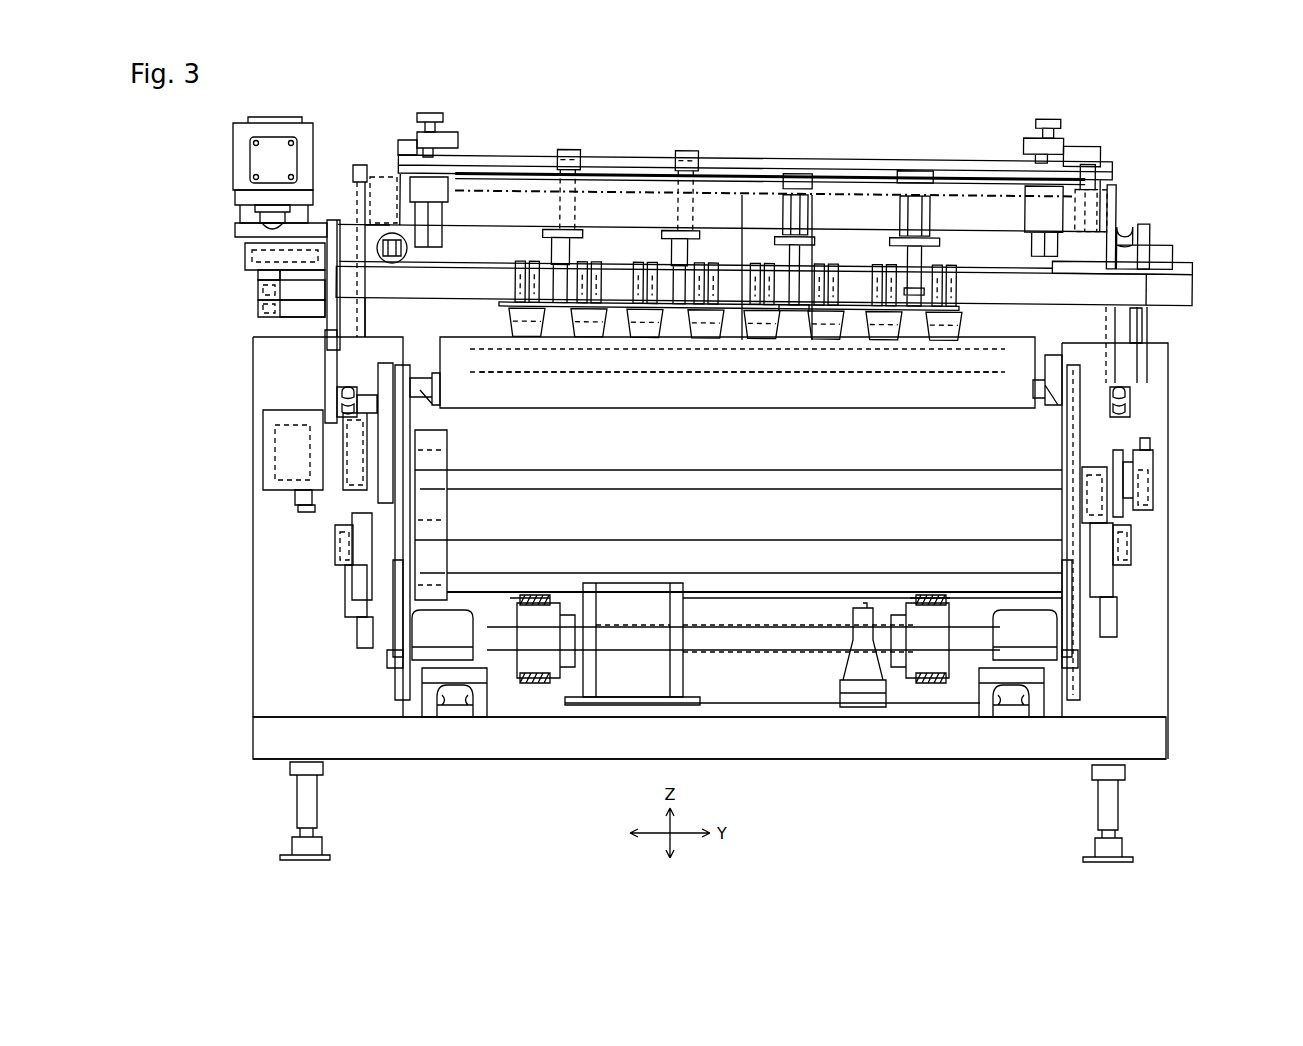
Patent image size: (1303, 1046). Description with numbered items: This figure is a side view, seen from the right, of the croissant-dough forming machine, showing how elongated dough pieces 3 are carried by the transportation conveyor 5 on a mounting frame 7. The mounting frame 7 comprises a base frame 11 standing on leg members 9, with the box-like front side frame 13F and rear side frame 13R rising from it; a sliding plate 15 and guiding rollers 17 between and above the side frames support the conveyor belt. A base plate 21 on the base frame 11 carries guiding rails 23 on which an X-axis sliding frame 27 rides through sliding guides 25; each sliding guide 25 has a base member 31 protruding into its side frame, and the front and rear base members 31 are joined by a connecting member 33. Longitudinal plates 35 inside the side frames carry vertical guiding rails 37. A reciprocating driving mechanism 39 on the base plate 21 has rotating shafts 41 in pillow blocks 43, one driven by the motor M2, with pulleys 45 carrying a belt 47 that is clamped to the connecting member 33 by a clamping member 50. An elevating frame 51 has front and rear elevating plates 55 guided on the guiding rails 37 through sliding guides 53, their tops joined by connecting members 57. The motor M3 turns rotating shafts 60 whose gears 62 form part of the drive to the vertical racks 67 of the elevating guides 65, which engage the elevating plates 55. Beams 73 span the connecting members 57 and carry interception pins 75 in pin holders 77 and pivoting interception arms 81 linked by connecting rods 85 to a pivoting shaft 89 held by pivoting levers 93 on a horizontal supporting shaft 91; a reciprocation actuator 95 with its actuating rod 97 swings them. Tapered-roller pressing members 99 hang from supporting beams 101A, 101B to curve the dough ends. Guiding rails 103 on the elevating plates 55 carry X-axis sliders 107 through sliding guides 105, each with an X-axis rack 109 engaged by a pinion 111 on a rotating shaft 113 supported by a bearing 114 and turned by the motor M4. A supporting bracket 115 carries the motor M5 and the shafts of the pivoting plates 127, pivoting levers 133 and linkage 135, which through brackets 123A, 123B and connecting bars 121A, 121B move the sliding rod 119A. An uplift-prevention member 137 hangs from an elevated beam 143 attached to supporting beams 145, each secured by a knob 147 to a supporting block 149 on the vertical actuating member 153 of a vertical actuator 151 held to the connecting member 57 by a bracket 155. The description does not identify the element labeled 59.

The croissant dough pieces 3 is at (686, 345).
The transportation conveyor 5 is at (758, 433).
The mounting frame 7 is at (823, 778).
The leg members 9 is at (318, 812).
The base frame 11 is at (776, 760).
The front side frame 13F is at (395, 700).
The rear side frame 13R is at (1068, 700).
The sliding plate 15 is at (1058, 335).
The guiding rollers 17 is at (1040, 410).
The base plate 21 is at (740, 722).
The guiding rails 23 is at (455, 703).
The sliding guides 25 is at (478, 720).
The X-axis sliding frame 27 is at (370, 666).
The base member 31 is at (398, 668).
The connecting member 33 is at (748, 600).
The longitudinal plates 35 is at (393, 648).
The guiding rails 37 is at (395, 375).
The reciprocating driving mechanism 39 is at (582, 748).
The rotating shafts 41 is at (812, 650).
The pillow blocks 43 is at (860, 705).
The pulleys 45 is at (548, 683).
The belt 47 is at (530, 686).
The clamping member 50 is at (555, 598).
The elevating frame 51 is at (1118, 179).
The sliding guides 53 is at (360, 520).
The elevating plates 55 is at (368, 325).
The connecting members 57 is at (620, 205).
The gear 59 is at (473, 452).
The rotating shafts 60 is at (645, 555).
The gears 62 is at (347, 590).
The elevating guide 65 is at (336, 545).
The vertical rack 67 is at (358, 632).
The beams 73 is at (655, 237).
The interception pins 75 is at (955, 320).
The pin holders 77 is at (922, 245).
The interception arms 81 is at (655, 348).
The connecting rods 85 is at (568, 150).
The pivoting shaft 89 is at (728, 168).
The horizontal supporting shaft 91 is at (380, 190).
The pivoting lever 93 is at (368, 182).
The reciprocation actuator 95 is at (408, 250).
The actuating rod 97 is at (385, 265).
The pressing members 99 is at (640, 345).
The supporting beam 101A is at (808, 360).
The supporting beam 101B is at (745, 360).
The guiding rails 103 is at (342, 408).
The sliding guide 105 is at (340, 395).
The X-axis slider 107 is at (325, 372).
The X-axis rack 109 is at (275, 445).
The pinion 111 is at (290, 500).
The rotating shaft 113 is at (815, 489).
The bearing 114 is at (1140, 470).
The supporting bracket 115 is at (245, 226).
The sliding rod 119A is at (1180, 292).
The connecting bar 121A is at (280, 317).
The connecting bar 121B is at (250, 258).
The bracket 123A is at (262, 310).
The bracket 123B is at (262, 290).
The pivoting plates 127 is at (258, 278).
The pivoting lever 133 is at (258, 215).
The linkage 135 is at (305, 195).
The uplift-prevention member 137 is at (795, 195).
The elevated beam 143 is at (905, 195).
The supporting beams 145 is at (835, 178).
The knob 147 is at (430, 112).
The supporting block 149 is at (418, 150).
The vertical actuator 151 is at (445, 222).
The vertical actuating member 153 is at (450, 145).
The bracket 155 is at (495, 190).
The motor M2 is at (637, 697).
The motor M3 is at (265, 465).
The motor M4 is at (300, 510).
The motor M5 is at (272, 120).